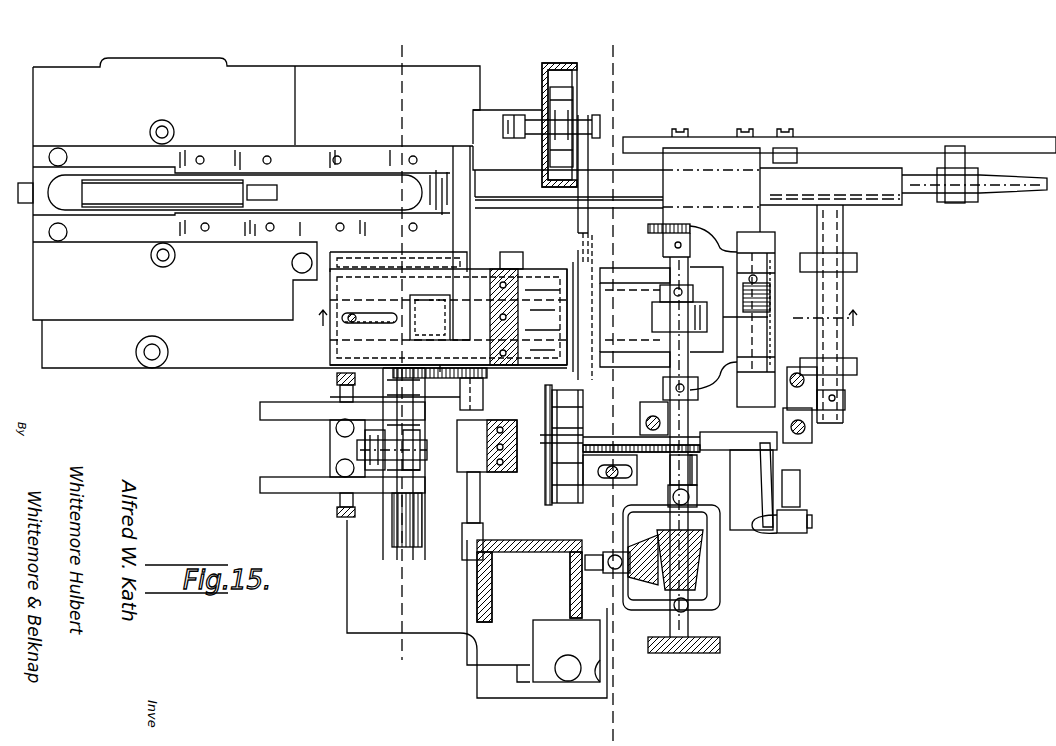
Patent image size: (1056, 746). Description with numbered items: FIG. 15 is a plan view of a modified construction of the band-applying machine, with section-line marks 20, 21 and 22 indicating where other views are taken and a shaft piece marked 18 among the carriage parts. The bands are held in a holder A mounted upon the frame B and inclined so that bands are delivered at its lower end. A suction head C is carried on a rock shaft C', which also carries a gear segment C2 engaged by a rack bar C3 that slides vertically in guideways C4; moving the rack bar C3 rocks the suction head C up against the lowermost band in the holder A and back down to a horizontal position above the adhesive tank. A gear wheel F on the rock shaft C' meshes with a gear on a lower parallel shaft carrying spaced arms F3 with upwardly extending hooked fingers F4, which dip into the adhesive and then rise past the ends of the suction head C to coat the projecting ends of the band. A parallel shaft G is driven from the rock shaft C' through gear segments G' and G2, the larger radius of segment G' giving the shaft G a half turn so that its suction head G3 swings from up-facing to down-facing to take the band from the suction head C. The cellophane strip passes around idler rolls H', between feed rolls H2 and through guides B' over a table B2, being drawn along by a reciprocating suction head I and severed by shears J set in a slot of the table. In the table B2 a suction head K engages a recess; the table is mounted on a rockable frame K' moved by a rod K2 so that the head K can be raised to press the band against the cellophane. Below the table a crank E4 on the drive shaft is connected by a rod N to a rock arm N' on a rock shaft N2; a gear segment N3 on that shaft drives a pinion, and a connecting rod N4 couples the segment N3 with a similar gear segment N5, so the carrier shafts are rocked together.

The section line 22 is at (407, 46).
The section line 21 is at (622, 42).
The section line 20 is at (587, 321).
The shaft 18 is at (318, 449).
The holder A is at (312, 487).
The frame B is at (477, 609).
The guides B' is at (635, 372).
The table B2 is at (631, 290).
The suction head C is at (393, 464).
The rock shaft C' is at (416, 512).
The gear segment C2 is at (392, 465).
The rack bar C3 is at (378, 478).
The guideways C4 is at (330, 455).
The crank E4 is at (783, 460).
The gear wheel F is at (410, 562).
The spaced arms F3 is at (458, 483).
The hooked fingers F4 is at (458, 485).
The shaft G is at (485, 396).
The gear segment G' is at (448, 371).
The gear segment G2 is at (487, 372).
The suction head G3 is at (530, 410).
The idler rolls H' is at (761, 284).
The feed rolls H2 is at (653, 326).
The reciprocating suction head I is at (410, 301).
The shears J is at (575, 264).
The suction head K is at (485, 308).
The rockable frame K' is at (292, 213).
The rod K2 is at (527, 263).
The rod N is at (787, 501).
The rock arm N' is at (753, 485).
The rock shaft N2 is at (629, 435).
The gear segment N3 is at (603, 505).
The connecting rod N4 is at (596, 220).
The gear segment N5 is at (572, 100).